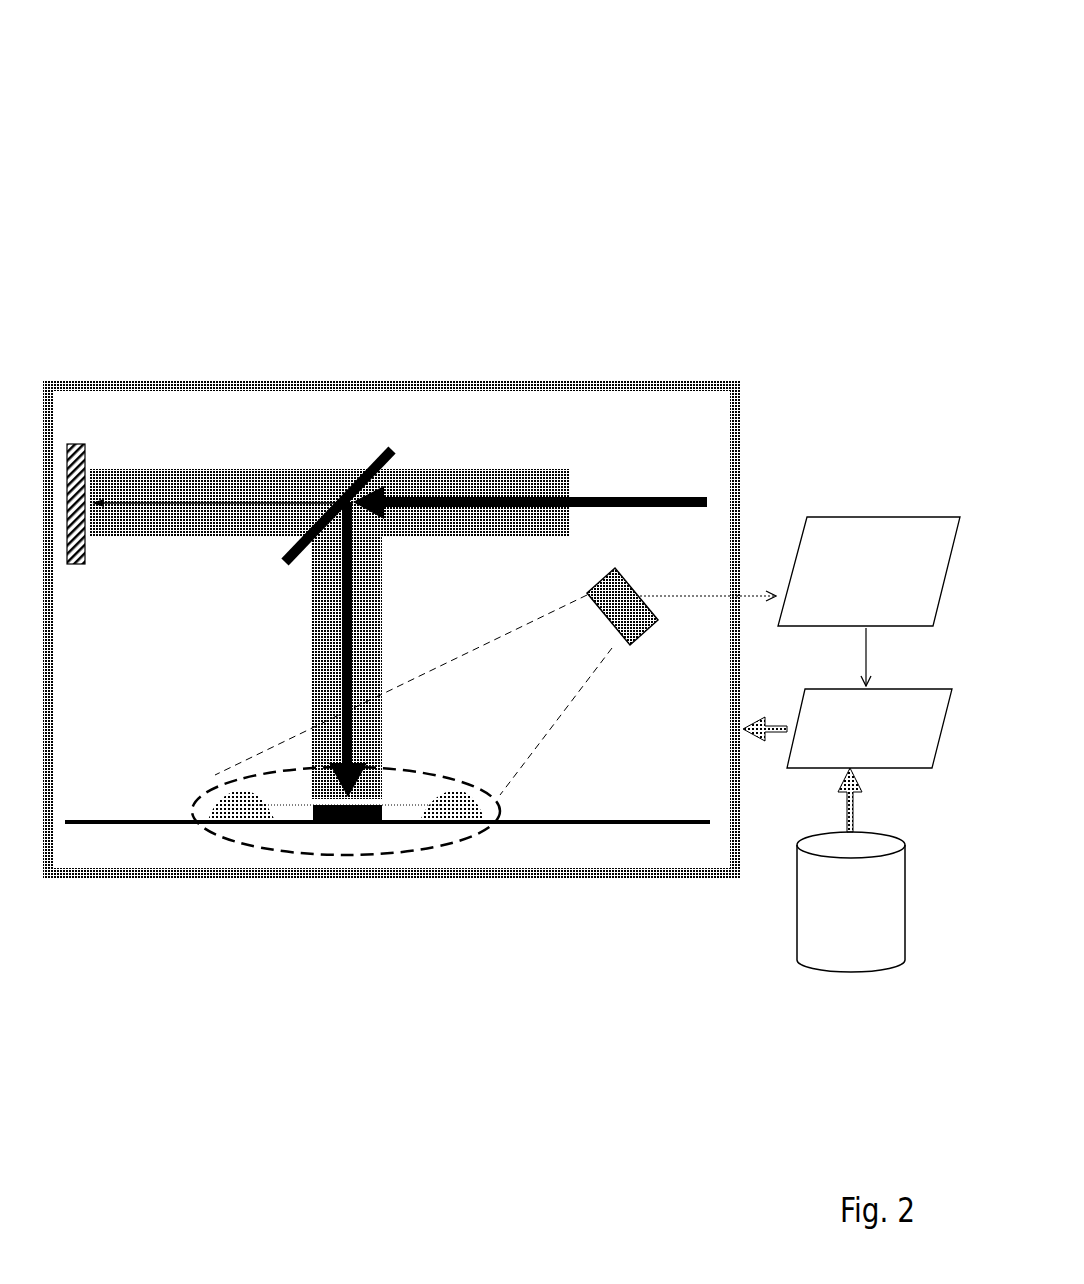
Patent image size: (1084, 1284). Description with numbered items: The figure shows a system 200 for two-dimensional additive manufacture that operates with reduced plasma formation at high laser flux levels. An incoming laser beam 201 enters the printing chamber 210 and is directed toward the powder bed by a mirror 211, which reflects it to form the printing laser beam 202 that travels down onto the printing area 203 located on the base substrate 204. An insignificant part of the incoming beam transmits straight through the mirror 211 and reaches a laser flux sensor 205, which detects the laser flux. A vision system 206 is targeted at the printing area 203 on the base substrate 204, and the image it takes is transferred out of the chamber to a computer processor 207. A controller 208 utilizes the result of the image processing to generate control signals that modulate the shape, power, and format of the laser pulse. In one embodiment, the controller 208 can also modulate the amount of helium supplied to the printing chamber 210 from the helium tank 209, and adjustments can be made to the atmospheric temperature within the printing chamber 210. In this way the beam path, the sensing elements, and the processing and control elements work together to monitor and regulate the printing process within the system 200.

The system 200 is at (790, 76).
The incoming laser beam 201 is at (446, 467).
The printing laser beam 202 is at (311, 689).
The printing area 203 is at (199, 792).
The base substrate 204 is at (136, 819).
The laser flux sensor 205 is at (76, 439).
The vision system 206 is at (632, 585).
The computer processor 207 is at (869, 601).
The controller 208 is at (847, 728).
The helium tank 209 is at (851, 870).
The printing chamber 210 is at (741, 467).
The mirror 211 is at (339, 477).